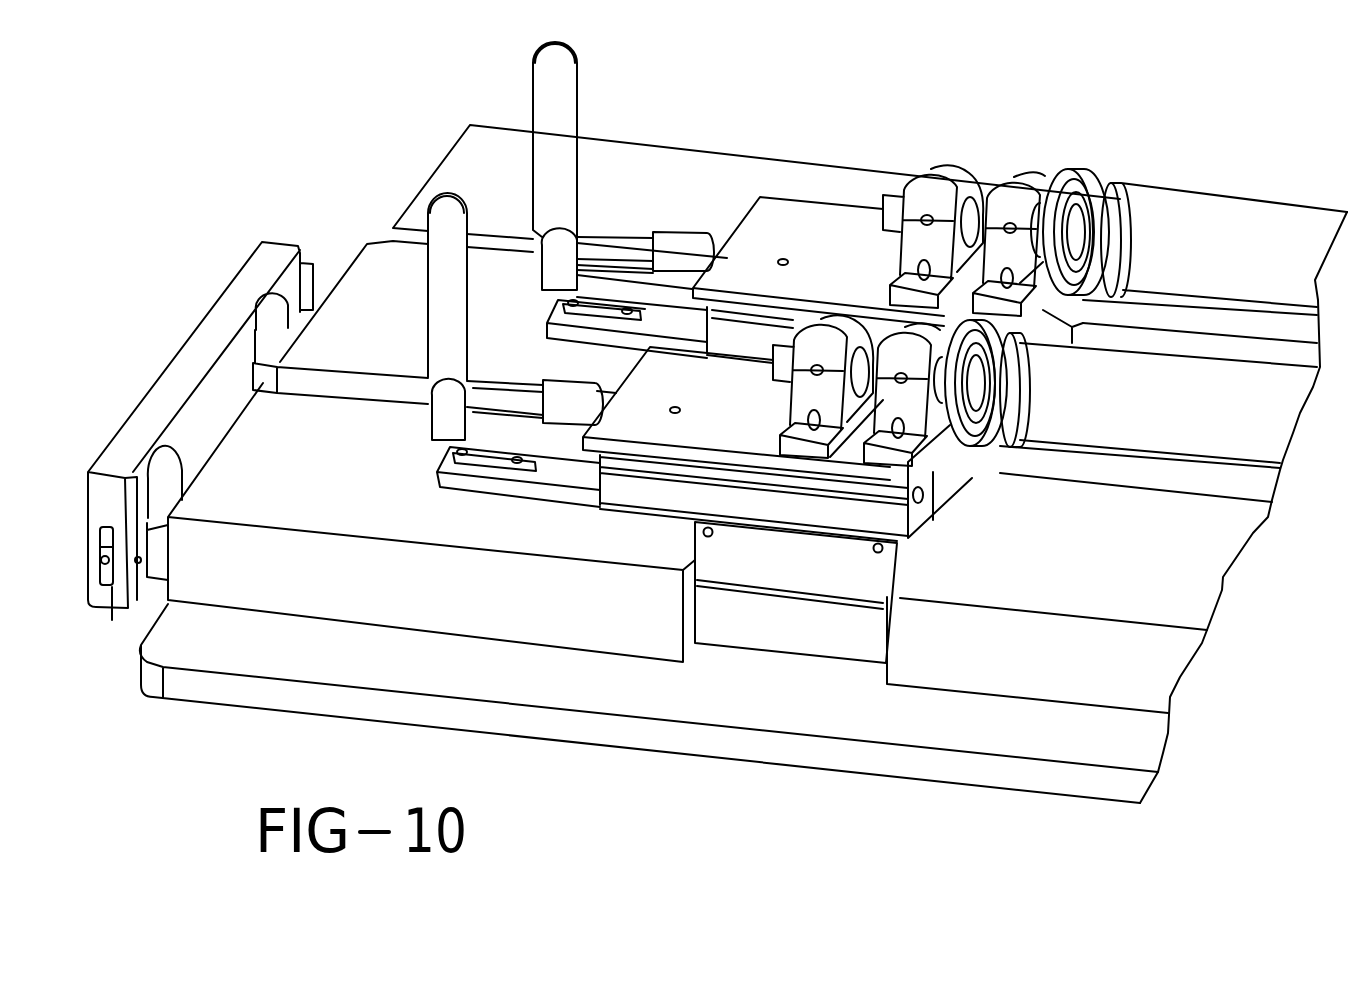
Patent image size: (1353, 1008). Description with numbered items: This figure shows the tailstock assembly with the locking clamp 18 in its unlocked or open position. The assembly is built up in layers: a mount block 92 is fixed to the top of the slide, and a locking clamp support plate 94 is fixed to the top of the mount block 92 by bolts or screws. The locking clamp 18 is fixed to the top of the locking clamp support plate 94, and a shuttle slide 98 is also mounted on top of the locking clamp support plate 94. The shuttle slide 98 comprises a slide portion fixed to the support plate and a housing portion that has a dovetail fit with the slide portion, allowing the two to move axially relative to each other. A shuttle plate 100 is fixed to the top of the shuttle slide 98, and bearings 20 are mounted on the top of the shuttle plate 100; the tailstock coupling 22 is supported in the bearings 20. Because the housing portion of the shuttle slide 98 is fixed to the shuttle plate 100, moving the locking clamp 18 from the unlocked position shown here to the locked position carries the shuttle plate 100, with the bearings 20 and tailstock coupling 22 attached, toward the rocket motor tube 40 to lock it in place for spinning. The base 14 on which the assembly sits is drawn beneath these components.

The base 14 is at (780, 623).
The locking clamp 18 is at (447, 413).
The bearings 20 is at (937, 178).
The tailstock coupling 22 is at (1083, 168).
The rocket motor tube 40 is at (1197, 213).
The mount block 92 is at (793, 563).
The locking clamp support plate 94 is at (517, 491).
The shuttle slide 98 is at (937, 473).
The shuttle plate 100 is at (784, 213).